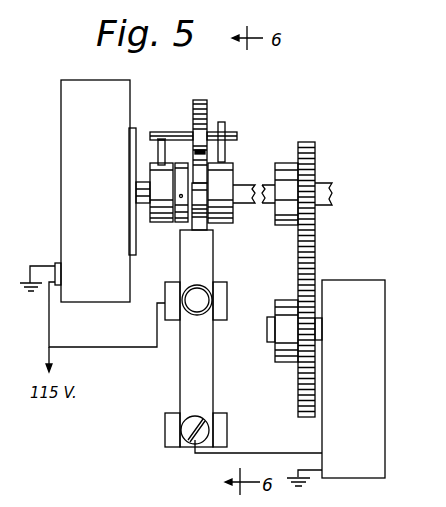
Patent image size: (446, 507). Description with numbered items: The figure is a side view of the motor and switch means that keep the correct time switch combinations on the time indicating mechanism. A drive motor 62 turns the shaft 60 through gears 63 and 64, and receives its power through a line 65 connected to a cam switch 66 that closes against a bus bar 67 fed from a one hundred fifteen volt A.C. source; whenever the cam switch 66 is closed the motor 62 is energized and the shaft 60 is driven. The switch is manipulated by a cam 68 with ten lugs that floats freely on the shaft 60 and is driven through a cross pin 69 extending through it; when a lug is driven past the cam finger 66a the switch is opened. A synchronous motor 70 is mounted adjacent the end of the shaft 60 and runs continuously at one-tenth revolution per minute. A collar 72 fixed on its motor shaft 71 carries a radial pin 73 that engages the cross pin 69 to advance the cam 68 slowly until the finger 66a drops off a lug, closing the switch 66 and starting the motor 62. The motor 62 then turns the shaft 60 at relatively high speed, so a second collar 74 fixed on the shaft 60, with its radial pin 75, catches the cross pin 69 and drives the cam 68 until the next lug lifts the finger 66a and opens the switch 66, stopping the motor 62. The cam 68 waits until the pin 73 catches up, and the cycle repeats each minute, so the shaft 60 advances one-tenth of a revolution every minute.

The shaft 60 is at (327, 190).
The drive motor 62 is at (368, 394).
The gear 63 is at (315, 277).
The gear 64 is at (310, 175).
The line 65 is at (262, 453).
The cam switch 66 is at (187, 367).
The cam finger 66a is at (198, 222).
The bus bar 67 is at (223, 305).
The cam 68 is at (207, 116).
The cross pin 69 is at (232, 138).
The synchronous motor 70 is at (110, 112).
The motor shaft 71 is at (148, 185).
The collar 72 is at (170, 220).
The radial pin 73 is at (162, 138).
The second collar 74 is at (220, 222).
The radial pin 75 is at (225, 152).